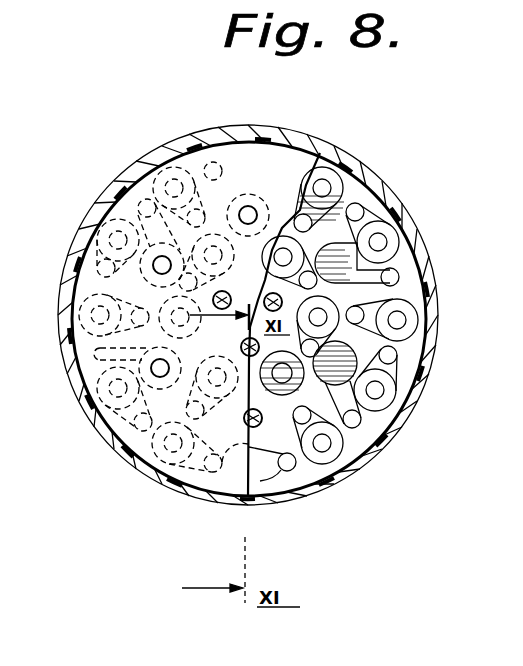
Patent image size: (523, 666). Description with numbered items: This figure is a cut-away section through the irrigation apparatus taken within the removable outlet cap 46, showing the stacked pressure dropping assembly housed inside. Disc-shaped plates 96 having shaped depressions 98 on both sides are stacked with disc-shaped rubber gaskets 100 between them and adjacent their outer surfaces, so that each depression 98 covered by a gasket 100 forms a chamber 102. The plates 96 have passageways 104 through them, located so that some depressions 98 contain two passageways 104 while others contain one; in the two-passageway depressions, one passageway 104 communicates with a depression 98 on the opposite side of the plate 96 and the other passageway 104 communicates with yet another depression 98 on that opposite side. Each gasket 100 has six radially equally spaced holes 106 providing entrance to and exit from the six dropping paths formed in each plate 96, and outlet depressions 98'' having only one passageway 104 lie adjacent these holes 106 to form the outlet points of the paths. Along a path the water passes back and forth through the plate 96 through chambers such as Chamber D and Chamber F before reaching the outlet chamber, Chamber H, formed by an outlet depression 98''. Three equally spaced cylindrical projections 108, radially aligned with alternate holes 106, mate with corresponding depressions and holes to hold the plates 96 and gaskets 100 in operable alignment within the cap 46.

The outlet cap 46 is at (82, 242).
The disc-shaped plate 96 is at (370, 270).
The shaped depression 98 is at (340, 332).
The outlet depression 98'' is at (375, 322).
The rubber gasket 100 is at (95, 367).
The chamber 102 is at (233, 157).
The passageway 104 is at (399, 323).
The hole 106 is at (158, 370).
The projection 108 is at (223, 292).
The Chamber H is at (183, 472).
The Chamber F is at (245, 503).
The Chamber D is at (330, 452).